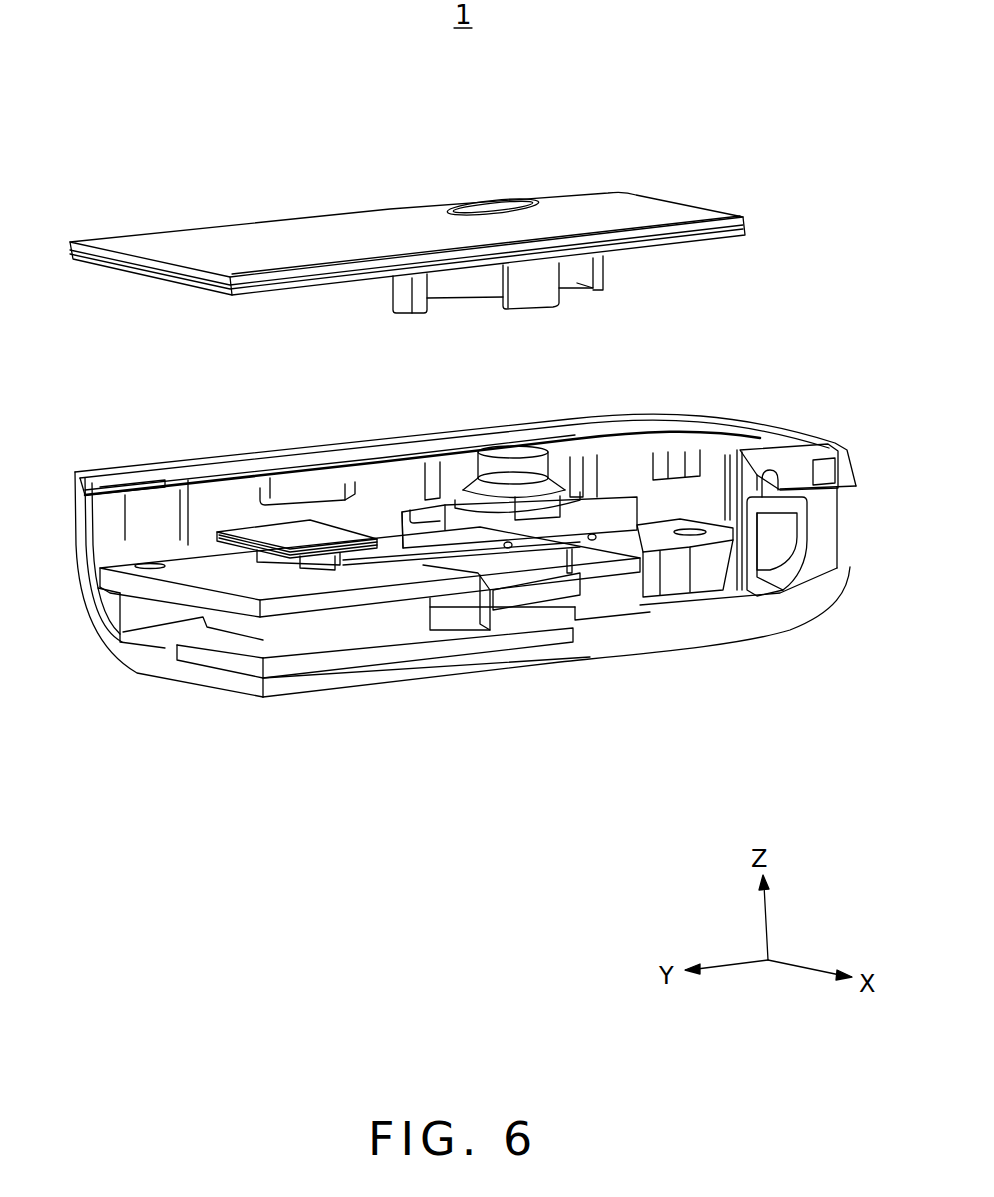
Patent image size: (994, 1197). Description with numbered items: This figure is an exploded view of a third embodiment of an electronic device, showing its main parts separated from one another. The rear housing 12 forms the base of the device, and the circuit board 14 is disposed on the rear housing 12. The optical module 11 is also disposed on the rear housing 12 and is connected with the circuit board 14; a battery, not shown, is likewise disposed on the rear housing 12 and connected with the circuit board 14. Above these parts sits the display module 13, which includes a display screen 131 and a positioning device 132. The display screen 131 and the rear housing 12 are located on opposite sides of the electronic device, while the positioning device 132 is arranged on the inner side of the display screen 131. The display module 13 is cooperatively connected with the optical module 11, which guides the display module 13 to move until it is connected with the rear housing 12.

The optical module 11 is at (615, 522).
The rear housing 12 is at (812, 592).
The display module 13 is at (407, 207).
The display screen 131 is at (665, 221).
The positioning device 132 is at (598, 270).
The circuit board 14 is at (187, 573).